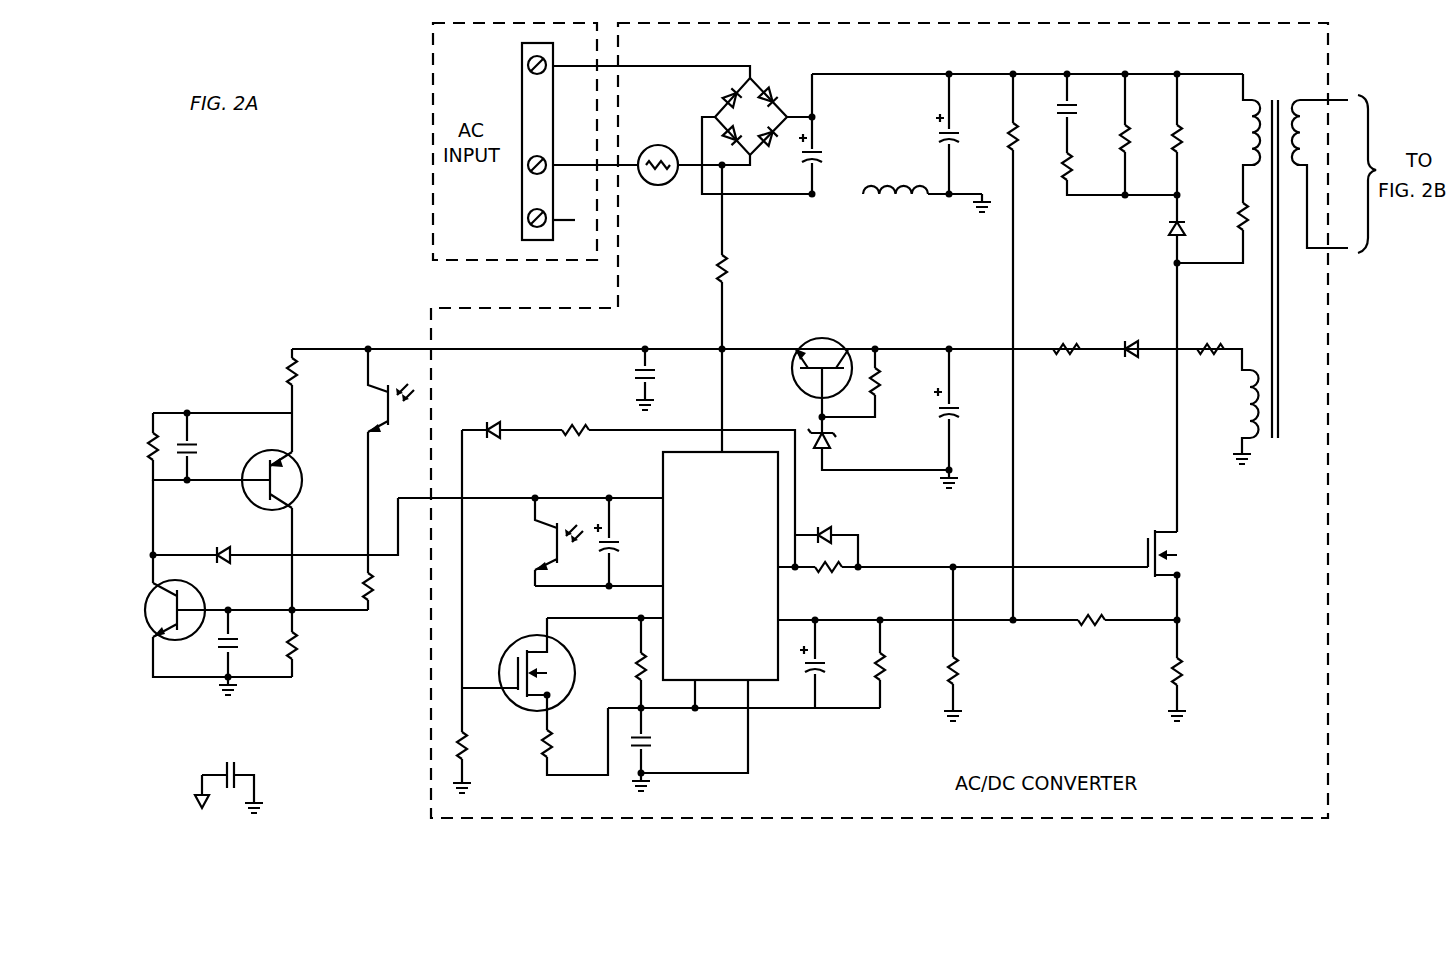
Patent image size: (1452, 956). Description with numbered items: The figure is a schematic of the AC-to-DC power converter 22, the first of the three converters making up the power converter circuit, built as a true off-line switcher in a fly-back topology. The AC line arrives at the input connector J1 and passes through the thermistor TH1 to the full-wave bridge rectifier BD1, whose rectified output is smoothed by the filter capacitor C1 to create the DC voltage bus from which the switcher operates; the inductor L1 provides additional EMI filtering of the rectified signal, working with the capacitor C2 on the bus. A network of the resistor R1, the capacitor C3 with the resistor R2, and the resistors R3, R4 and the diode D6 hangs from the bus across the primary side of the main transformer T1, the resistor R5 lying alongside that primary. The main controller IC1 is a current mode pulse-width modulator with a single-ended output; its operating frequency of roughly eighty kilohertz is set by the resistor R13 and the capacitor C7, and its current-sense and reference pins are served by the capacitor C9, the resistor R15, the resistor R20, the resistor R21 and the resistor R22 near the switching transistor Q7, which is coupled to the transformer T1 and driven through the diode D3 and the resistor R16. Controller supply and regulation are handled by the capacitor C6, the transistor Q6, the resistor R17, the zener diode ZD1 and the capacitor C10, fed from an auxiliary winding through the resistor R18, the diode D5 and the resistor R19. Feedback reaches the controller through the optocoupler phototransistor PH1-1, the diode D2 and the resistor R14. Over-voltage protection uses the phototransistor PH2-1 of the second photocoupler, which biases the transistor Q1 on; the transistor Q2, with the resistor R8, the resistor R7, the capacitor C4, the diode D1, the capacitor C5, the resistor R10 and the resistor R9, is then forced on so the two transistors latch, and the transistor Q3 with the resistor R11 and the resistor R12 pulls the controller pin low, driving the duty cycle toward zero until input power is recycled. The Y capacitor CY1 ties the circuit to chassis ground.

The AC-to-DC power converter 22 is at (431, 718).
The AC input terminal block J1 is at (536, 141).
The thermistor TH1 is at (659, 153).
The full-wave bridge rectifier BD1 is at (751, 99).
The filter capacitor C1 is at (824, 136).
The inductor L1 is at (927, 188).
The capacitor C2 is at (961, 134).
The resistor R1 is at (1028, 347).
The capacitor C3 is at (1079, 112).
The resistor R2 is at (1119, 174).
The resistor R3 is at (1140, 135).
The resistor R4 is at (1192, 135).
The diode D6 is at (1164, 231).
The resistor R5 is at (984, 226).
The main transformer T1 is at (1290, 269).
The capacitor C6 is at (638, 468).
The transistor Q6 is at (822, 368).
The resistor R17 is at (868, 382).
The zener diode ZD1 is at (878, 443).
The capacitor C10 is at (964, 417).
The resistor R18 is at (1064, 334).
The diode D5 is at (1136, 336).
The resistor R19 is at (1208, 334).
The MOSFET switching transistor Q7 is at (1179, 554).
The resistor R20 is at (969, 643).
The resistor R21 is at (1088, 641).
The resistor R22 is at (1193, 648).
The main controller IC1 is at (721, 566).
The diode D2 is at (512, 416).
The resistor R14 is at (675, 480).
The diode D3 is at (826, 534).
The resistor R16 is at (827, 585).
The phototransistor of optocoupler PH1 PH1-1 is at (530, 541).
The transistor Q3 is at (518, 661).
The resistor R11 is at (478, 611).
The resistor R12 is at (575, 741).
The resistor R13 is at (621, 663).
The capacitor C7 is at (654, 749).
The capacitor C9 is at (825, 663).
The resistor R15 is at (898, 663).
The transistor Q2 is at (287, 511).
The resistor R8 is at (276, 381).
The resistor R7 is at (205, 446).
The capacitor C4 is at (199, 447).
The diode D1 is at (274, 530).
The transistor Q1 is at (205, 578).
The capacitor C5 is at (241, 651).
The resistor R10 is at (310, 642).
The resistor R9 is at (381, 521).
The phototransistor of optocoupler PH2 PH2-1 is at (361, 389).
The Y capacitor CY1 is at (229, 772).